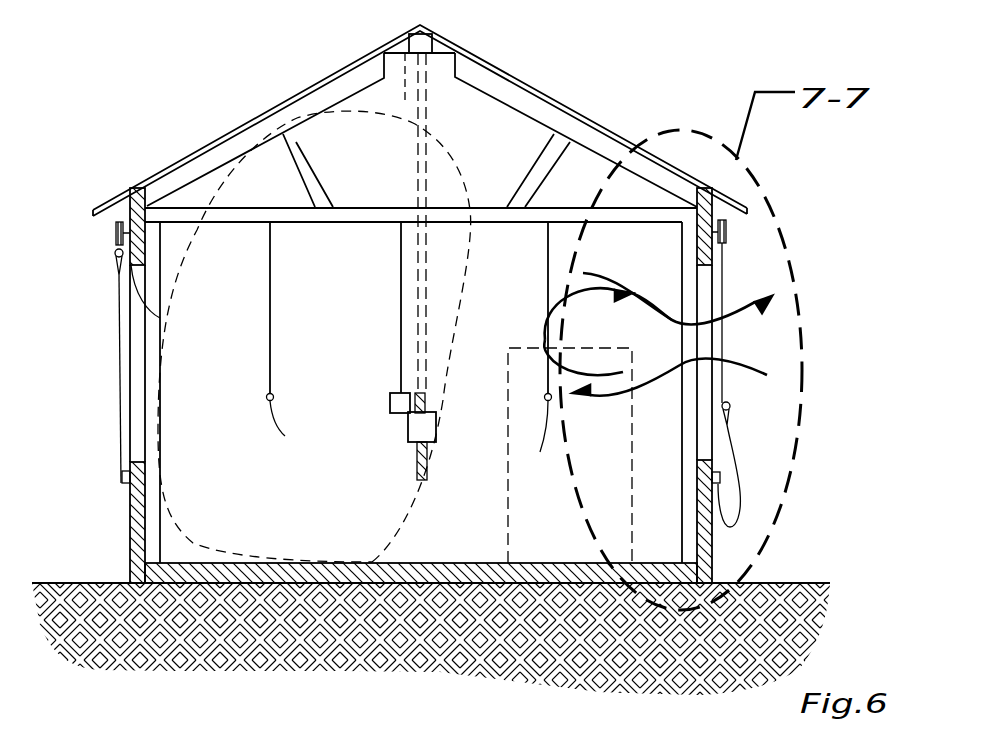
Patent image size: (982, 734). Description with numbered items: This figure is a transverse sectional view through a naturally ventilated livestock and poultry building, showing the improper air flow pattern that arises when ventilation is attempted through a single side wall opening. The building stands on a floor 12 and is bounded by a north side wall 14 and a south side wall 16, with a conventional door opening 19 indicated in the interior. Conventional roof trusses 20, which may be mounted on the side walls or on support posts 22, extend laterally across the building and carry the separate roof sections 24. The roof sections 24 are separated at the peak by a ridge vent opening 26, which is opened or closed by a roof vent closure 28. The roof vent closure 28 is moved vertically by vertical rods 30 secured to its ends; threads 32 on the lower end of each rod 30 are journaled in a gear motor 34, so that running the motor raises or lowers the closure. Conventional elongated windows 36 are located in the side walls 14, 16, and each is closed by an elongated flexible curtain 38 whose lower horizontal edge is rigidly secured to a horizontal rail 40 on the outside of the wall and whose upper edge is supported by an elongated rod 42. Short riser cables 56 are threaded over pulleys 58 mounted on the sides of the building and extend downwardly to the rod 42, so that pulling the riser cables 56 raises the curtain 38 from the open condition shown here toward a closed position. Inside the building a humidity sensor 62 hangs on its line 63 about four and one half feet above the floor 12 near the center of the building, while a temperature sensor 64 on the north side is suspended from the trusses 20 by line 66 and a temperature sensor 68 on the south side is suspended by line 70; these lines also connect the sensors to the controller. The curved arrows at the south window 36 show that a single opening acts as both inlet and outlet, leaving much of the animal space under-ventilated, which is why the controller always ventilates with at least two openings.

The floor 12 is at (372, 560).
The north side wall 14 is at (138, 515).
The south side wall 16 is at (697, 497).
The door opening 19 is at (508, 498).
The roof truss 20 is at (508, 108).
The support post 22 is at (690, 404).
The roof section 24 is at (237, 128).
The ridge vent opening 26 is at (405, 100).
The roof vent closure 28 is at (409, 34).
The vertical rod 30 is at (422, 270).
The threads 32 is at (417, 462).
The gear motor 34 is at (438, 430).
The window 36 is at (160, 318).
The curtain 38 is at (120, 372).
The horizontal rail 40 is at (122, 476).
The rod 42 is at (115, 253).
The riser cable 56 is at (723, 269).
The pulley 58 is at (115, 227).
The humidity sensor 62 is at (392, 398).
The line 63 is at (401, 282).
The temperature sensor 64 is at (285, 436).
The line 66 is at (271, 258).
The temperature sensor 68 is at (548, 413).
The line 70 is at (547, 262).